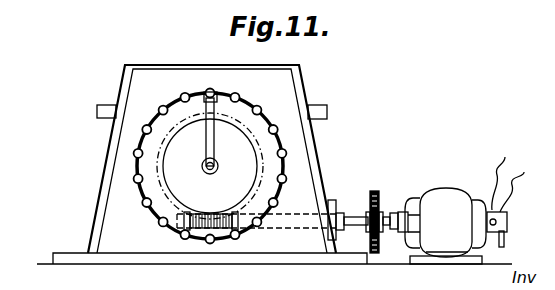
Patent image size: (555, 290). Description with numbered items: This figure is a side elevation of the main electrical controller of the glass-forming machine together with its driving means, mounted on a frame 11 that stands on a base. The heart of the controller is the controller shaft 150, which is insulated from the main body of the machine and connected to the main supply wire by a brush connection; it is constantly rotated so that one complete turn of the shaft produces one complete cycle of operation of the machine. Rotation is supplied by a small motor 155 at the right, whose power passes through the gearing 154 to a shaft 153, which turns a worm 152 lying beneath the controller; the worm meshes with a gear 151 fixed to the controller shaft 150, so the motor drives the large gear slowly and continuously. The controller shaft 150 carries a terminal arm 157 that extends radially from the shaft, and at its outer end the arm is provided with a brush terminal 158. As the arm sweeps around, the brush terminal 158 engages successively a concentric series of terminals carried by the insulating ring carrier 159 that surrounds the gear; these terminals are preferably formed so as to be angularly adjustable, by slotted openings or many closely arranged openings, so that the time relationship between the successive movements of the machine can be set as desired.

The frame 11 is at (318, 163).
The controller shaft 150 is at (207, 176).
The gear 151 is at (234, 118).
The worm 152 is at (219, 243).
The shaft 153 is at (351, 213).
The gearing 154 is at (376, 207).
The small motor 155 is at (455, 193).
The terminal arm 157 is at (206, 137).
The brush terminal 158 is at (215, 97).
The insulating ring carrier 159 is at (186, 100).